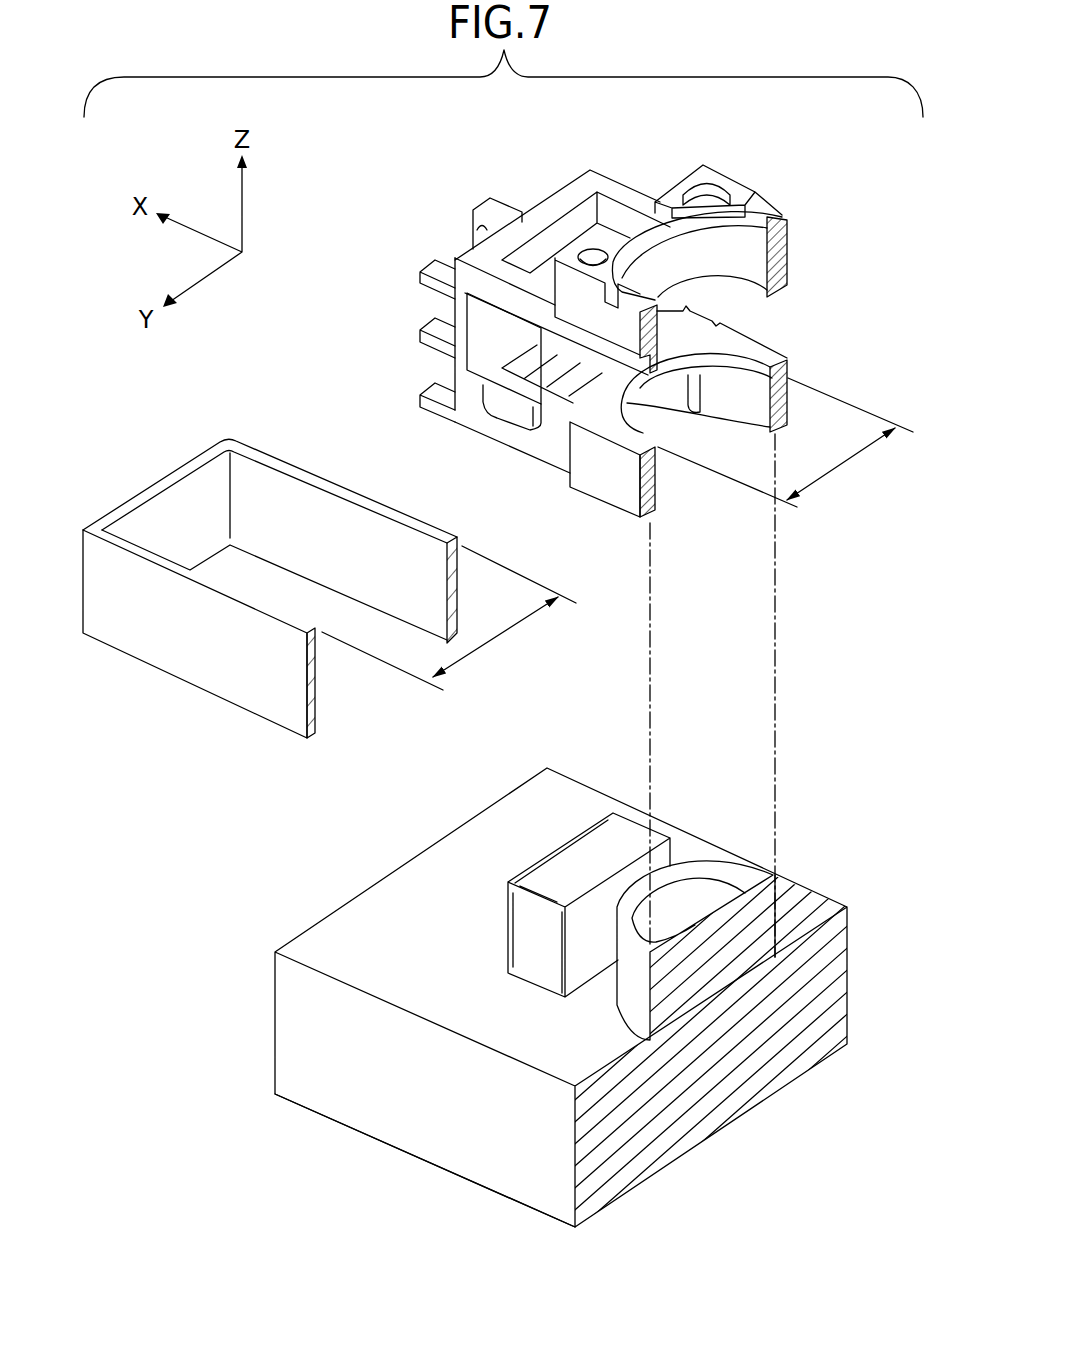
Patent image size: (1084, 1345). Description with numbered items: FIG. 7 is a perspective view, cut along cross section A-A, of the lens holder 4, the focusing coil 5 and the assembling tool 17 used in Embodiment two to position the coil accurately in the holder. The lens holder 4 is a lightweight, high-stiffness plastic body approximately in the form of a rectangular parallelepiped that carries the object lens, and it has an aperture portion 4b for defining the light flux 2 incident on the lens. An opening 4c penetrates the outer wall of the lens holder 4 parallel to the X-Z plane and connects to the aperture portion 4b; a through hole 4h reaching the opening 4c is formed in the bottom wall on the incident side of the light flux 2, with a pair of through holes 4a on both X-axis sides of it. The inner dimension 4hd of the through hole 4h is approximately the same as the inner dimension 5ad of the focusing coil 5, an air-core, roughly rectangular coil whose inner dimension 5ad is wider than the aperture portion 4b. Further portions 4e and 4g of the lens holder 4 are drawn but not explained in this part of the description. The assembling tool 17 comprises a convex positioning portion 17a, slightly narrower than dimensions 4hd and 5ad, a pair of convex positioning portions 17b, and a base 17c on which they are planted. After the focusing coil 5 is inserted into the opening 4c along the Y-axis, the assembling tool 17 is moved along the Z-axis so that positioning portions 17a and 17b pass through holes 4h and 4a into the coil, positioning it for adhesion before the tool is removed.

The light flux 2 is at (745, 535).
The lens holder 4 is at (563, 325).
The through holes 4a is at (553, 368).
The aperture portion 4b is at (713, 283).
The opening 4c is at (480, 328).
The projecting tabs 4e is at (431, 322).
The tab 4g is at (476, 209).
The through hole 4h is at (677, 372).
The inner dimension of the through hole 4hd is at (785, 442).
The focusing coil 5 is at (154, 482).
The inner dimension of the focusing coil 5ad is at (449, 618).
The assembling tool 17 is at (572, 987).
The positioning portion 17a is at (766, 919).
The positioning portions 17b is at (627, 836).
The base 17c is at (460, 1142).